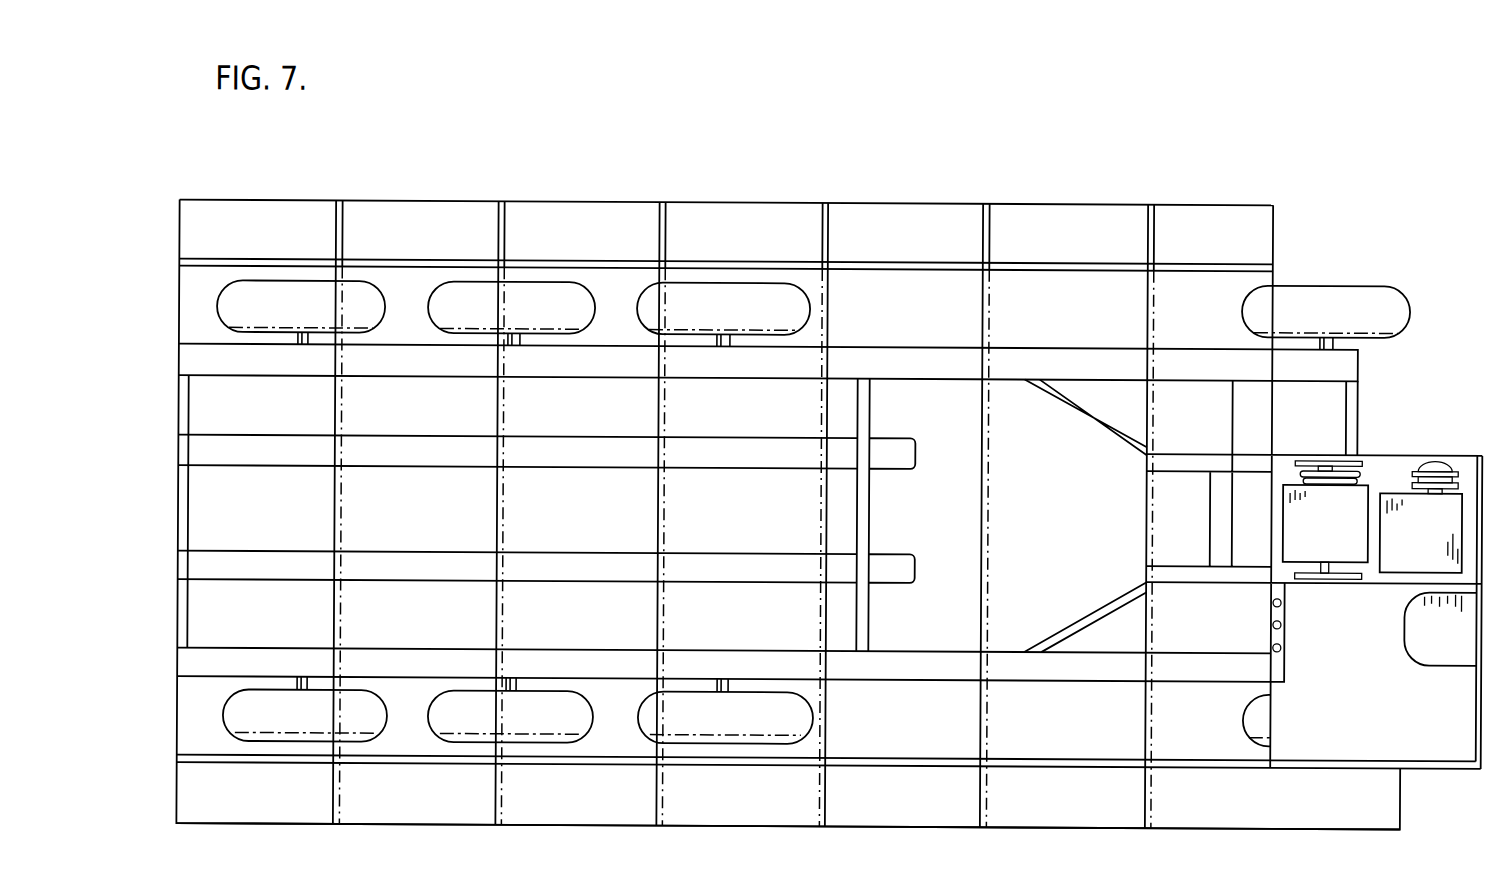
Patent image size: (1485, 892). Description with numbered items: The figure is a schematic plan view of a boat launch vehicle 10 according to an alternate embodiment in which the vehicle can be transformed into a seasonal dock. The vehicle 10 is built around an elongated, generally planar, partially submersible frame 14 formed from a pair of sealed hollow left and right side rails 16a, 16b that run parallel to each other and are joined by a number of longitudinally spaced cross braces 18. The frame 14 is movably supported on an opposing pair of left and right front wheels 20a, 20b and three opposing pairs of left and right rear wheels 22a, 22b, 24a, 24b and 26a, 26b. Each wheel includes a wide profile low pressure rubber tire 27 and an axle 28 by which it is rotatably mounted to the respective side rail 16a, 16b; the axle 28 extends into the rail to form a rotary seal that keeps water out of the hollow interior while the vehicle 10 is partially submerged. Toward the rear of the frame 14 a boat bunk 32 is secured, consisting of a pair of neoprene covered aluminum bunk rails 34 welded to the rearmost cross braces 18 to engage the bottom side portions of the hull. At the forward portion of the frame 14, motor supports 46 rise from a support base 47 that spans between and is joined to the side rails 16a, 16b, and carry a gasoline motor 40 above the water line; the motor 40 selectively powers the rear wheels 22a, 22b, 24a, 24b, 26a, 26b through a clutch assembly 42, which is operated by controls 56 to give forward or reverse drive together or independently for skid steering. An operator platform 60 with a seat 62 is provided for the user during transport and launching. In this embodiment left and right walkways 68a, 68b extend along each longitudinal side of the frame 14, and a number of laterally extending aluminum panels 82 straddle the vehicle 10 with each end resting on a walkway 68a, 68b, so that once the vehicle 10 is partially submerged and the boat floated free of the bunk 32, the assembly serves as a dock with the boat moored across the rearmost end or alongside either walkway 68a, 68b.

The launch vehicle 10 is at (1140, 181).
The frame 14 is at (1085, 352).
The left side rail 16a is at (893, 346).
The right side rail 16b is at (945, 668).
The cross brace 18 is at (190, 411).
The left front wheel 20a is at (1367, 302).
The right front wheel 20b is at (1248, 720).
The left rear wheel 22a is at (693, 298).
The right rear wheel 22b is at (688, 706).
The left rear wheel 24a is at (570, 320).
The right rear wheel 24b is at (556, 692).
The left rear wheel 26a is at (361, 299).
The right rear wheel 26b is at (250, 690).
The rubber tire 27 is at (284, 325).
The axle 28 is at (288, 349).
The boat bunk 32 is at (901, 478).
The bunk rail 34 is at (402, 570).
The motor 40 is at (1435, 537).
The clutch assembly 42 is at (1340, 537).
The motor support 46 is at (1190, 568).
The support base 47 is at (1180, 620).
The controls 56 is at (1282, 600).
The operator platform 60 is at (1358, 737).
The seat 62 is at (1446, 642).
The left walkway 68a is at (914, 202).
The right walkway 68b is at (905, 806).
The aluminum panel 82 is at (264, 254).